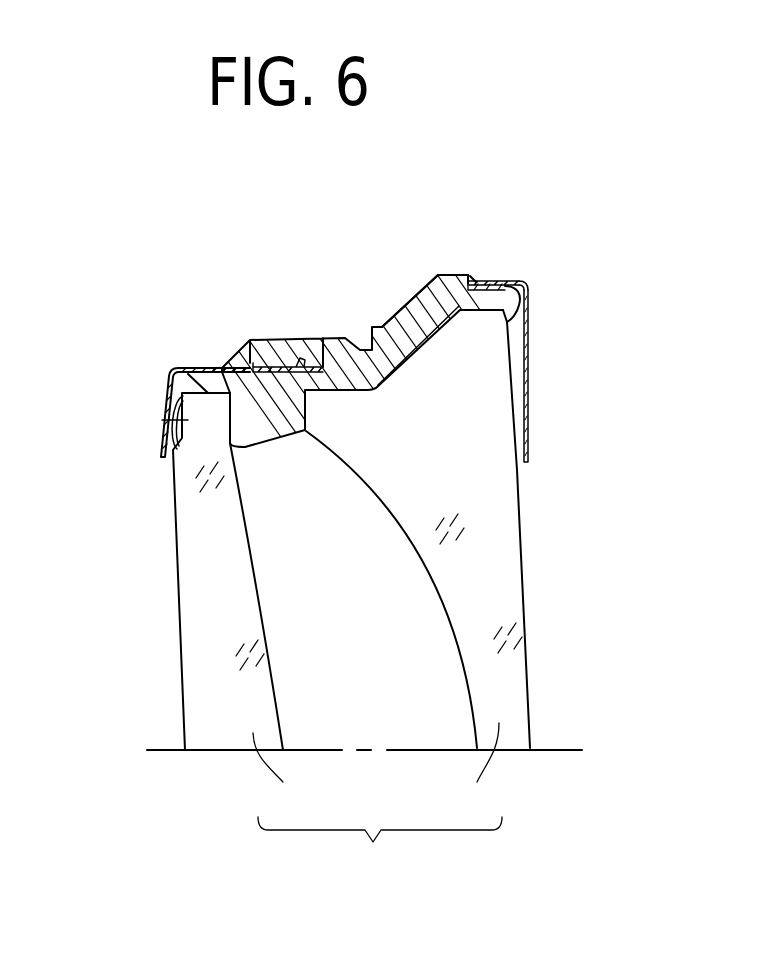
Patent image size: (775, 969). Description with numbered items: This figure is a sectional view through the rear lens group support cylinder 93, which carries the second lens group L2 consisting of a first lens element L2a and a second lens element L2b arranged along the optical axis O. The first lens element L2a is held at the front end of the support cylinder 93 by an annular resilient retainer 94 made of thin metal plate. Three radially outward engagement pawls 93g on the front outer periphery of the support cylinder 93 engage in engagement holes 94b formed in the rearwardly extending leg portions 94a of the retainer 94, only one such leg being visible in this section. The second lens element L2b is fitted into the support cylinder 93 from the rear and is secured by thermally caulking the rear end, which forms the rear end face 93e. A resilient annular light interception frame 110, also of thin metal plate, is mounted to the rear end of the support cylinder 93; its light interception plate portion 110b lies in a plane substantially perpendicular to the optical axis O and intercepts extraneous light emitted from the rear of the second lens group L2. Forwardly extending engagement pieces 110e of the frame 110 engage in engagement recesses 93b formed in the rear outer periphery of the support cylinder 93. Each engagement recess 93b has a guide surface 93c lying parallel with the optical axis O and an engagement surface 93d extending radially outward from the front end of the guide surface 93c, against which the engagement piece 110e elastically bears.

The rear lens group support cylinder 93 is at (420, 270).
The engagement recess 93b is at (553, 173).
The guide surface 93c is at (497, 282).
The engagement surface 93d is at (478, 278).
The rear end face 93e is at (528, 297).
The engagement pawl 93g is at (228, 366).
The resilient retainer 94 is at (158, 364).
The leg portion 94a is at (197, 368).
The engagement hole 94b is at (218, 367).
The light interception frame 110 is at (552, 446).
The light interception plate portion 110b is at (530, 392).
The engagement piece 110e is at (512, 281).
The first lens element L2a is at (290, 782).
The second lens element L2b is at (465, 777).
The second lens group L2 is at (380, 858).
The optical axis O is at (163, 752).